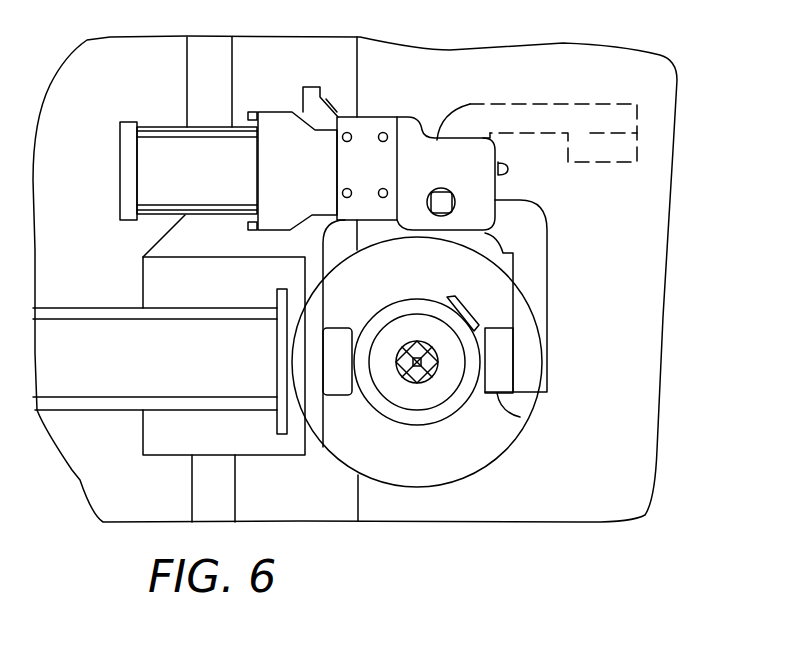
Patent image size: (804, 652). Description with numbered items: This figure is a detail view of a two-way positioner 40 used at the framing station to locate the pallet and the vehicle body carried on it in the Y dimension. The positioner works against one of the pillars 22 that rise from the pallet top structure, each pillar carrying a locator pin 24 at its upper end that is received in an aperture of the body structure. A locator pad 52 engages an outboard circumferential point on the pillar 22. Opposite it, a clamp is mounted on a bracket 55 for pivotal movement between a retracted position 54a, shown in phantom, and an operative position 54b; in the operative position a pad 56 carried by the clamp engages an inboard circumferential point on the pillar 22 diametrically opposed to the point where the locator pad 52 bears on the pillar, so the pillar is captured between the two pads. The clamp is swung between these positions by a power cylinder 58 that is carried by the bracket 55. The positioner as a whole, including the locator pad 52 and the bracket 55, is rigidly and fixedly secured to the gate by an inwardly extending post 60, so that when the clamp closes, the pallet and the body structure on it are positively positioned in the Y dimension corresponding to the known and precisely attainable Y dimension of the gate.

The pillar 22 is at (397, 427).
The locator pin 24 is at (430, 377).
The two-way positioner 40 is at (382, 92).
The locator pad 52 is at (335, 322).
The retracted position 54a is at (487, 97).
The operative position 54b is at (533, 327).
The bracket 55 is at (483, 187).
The pad 56 is at (520, 417).
The power cylinder 58 is at (193, 193).
The post 60 is at (203, 374).